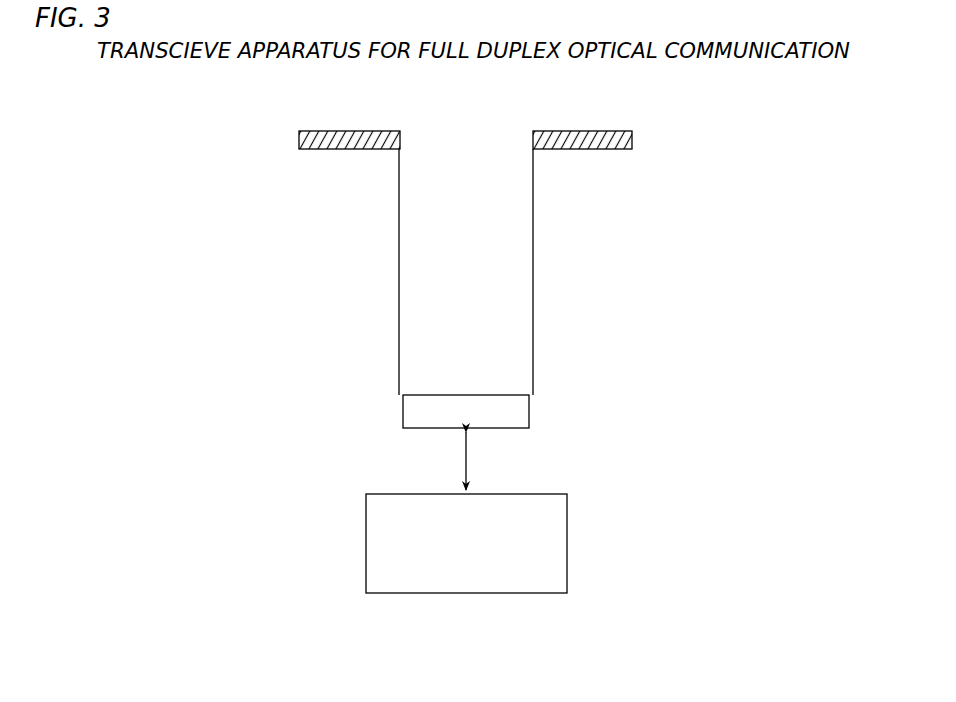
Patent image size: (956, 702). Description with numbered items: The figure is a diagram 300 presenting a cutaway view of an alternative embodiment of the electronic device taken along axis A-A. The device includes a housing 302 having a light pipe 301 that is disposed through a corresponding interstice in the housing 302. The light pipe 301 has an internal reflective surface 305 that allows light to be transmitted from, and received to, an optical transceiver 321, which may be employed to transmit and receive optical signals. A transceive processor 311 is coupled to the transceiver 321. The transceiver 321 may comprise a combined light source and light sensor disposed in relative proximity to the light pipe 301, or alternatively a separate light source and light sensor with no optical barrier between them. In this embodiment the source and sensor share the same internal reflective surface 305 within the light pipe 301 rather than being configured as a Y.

The diagram 300 is at (769, 127).
The light pipe 301 is at (534, 245).
The housing 302 is at (603, 131).
The internal reflective surface 305 is at (452, 245).
The optical transceiver 321 is at (529, 410).
The transceive processor 311 is at (466, 543).